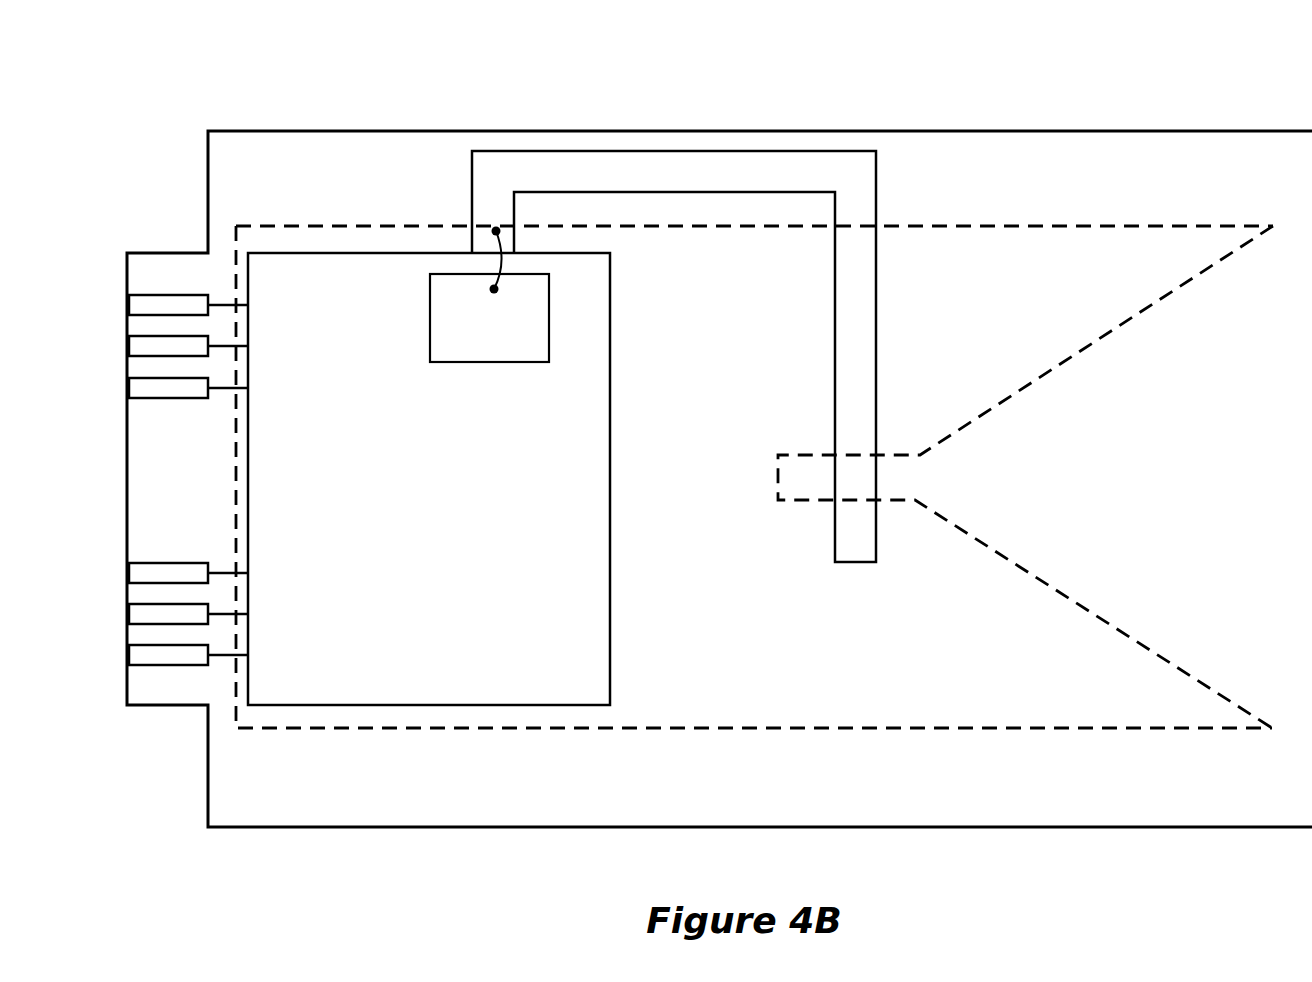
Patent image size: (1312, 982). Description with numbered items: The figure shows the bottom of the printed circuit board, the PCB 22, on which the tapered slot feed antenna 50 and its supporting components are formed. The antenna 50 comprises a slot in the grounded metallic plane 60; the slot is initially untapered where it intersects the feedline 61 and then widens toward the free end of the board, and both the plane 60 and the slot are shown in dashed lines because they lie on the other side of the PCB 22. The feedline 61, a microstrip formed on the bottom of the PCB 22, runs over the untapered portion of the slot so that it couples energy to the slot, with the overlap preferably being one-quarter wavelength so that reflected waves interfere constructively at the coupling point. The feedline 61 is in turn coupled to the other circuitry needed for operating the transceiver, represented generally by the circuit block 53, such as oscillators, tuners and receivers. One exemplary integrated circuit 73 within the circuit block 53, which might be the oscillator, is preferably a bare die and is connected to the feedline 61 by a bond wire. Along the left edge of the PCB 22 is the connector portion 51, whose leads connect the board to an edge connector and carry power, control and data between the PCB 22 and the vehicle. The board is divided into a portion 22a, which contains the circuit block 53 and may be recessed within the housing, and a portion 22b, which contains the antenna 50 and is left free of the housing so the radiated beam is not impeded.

The PCB 22 is at (168, 768).
The portion of the PCB 22a is at (250, 95).
The portion of the PCB 22b is at (753, 95).
The connector portion 51 is at (215, 95).
The circuit block 53 is at (429, 479).
The integrated circuit 73 is at (489, 295).
The feedline 61 is at (743, 177).
The grounded metallic plane 60 is at (926, 730).
The tapered slot feed antenna 50 is at (1153, 742).